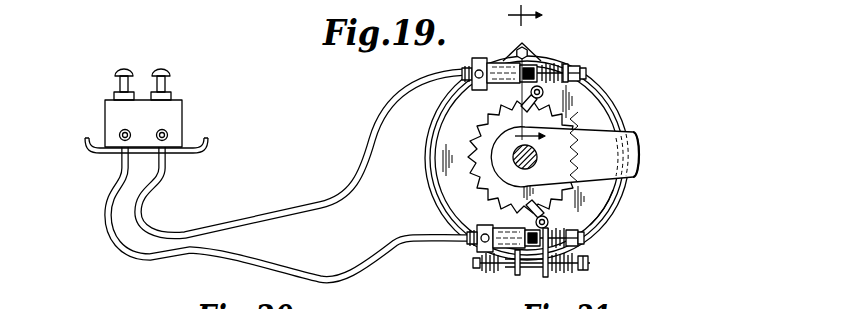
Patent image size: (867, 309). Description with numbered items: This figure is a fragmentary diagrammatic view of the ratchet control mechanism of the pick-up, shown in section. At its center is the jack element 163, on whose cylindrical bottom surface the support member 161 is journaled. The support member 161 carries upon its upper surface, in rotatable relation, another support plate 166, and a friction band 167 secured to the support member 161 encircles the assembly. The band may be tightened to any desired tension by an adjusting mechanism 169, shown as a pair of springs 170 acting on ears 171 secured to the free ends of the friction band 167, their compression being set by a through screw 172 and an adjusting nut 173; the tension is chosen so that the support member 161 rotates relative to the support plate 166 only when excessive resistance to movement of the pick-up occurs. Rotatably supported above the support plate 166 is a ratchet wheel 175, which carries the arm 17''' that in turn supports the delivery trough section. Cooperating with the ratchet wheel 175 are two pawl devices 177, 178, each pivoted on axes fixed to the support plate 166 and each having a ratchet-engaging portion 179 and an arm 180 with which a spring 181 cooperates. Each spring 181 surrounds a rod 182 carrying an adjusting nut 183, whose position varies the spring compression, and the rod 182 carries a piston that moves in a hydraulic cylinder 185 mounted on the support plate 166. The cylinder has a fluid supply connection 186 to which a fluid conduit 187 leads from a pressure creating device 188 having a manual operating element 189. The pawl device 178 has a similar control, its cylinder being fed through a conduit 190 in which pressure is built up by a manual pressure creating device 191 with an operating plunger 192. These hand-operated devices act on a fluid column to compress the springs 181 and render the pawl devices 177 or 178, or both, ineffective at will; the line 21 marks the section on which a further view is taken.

The section line 21— 21 is at (537, 78).
The support member 161 is at (428, 191).
The jack element 163 is at (517, 164).
The support plate 166 is at (586, 120).
The friction band 167 is at (606, 220).
The adjusting mechanism 169 is at (590, 266).
The springs 170 is at (487, 272).
The ears 171 is at (526, 270).
The through screw 172 is at (513, 273).
The adjusting nut 173 is at (472, 262).
The ratchet wheel 175 is at (470, 163).
The pawl device 177 is at (548, 93).
The pawl device 178 is at (592, 204).
The ratchet-engaging portion 179 is at (527, 99).
The arm 180 is at (541, 64).
The spring 181 is at (574, 68).
The rod 182 is at (562, 62).
The adjusting nut 183 is at (578, 71).
The hydraulic cylinder 185 is at (502, 62).
The fluid supply connection 186 is at (473, 63).
The fluid conduit 187 is at (351, 186).
The pressure creating device 188 is at (182, 118).
The manual operating element 189 is at (164, 67).
The conduit 190 is at (337, 270).
The manual pressure creating device 191 is at (107, 118).
The operating plunger 192 is at (123, 67).
The arm 17''' is at (653, 144).